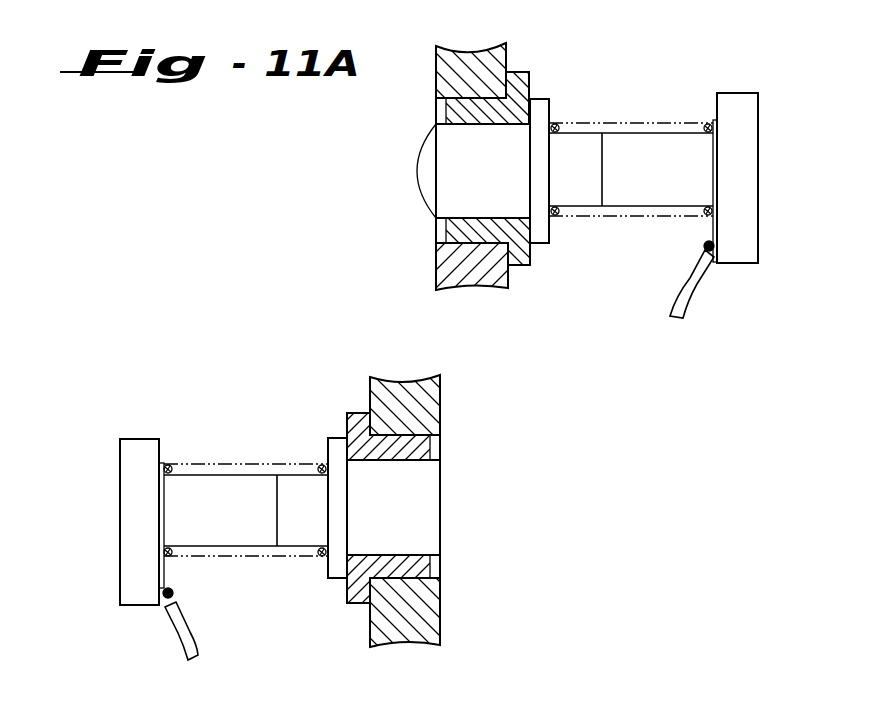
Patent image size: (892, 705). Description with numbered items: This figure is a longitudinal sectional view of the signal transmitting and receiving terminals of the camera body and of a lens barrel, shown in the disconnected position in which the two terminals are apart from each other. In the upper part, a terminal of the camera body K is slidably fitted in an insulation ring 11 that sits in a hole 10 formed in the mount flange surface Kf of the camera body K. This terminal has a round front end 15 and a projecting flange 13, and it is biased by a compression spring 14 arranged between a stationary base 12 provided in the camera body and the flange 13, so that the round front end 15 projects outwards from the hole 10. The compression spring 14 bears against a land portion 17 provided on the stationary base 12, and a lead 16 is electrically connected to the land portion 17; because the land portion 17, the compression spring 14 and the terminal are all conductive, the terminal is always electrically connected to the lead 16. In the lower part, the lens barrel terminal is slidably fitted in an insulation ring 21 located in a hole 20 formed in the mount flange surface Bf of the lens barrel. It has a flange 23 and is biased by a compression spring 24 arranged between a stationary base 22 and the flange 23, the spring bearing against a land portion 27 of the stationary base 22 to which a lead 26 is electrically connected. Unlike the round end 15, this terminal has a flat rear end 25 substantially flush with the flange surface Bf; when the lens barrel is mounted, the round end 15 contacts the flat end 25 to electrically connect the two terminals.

The hole 10 is at (438, 244).
The insulation ring 11 is at (457, 113).
The stationary base 12 is at (748, 203).
The projecting flange 13 is at (550, 239).
The compression spring 14 is at (638, 214).
The round front end 15 is at (430, 167).
The lead 16 is at (684, 312).
The land portion 17 is at (713, 178).
The hole 20 is at (432, 444).
The insulation ring 21 is at (392, 452).
The stationary base 22 is at (130, 588).
The flange 23 is at (338, 569).
The compression spring 24 is at (238, 553).
The flat rear end 25 is at (440, 500).
The lead 26 is at (195, 653).
The land portion 27 is at (164, 513).
The camera body K is at (663, 64).
The mount flange surface Kf is at (436, 65).
The mount flange surface Bf is at (440, 406).